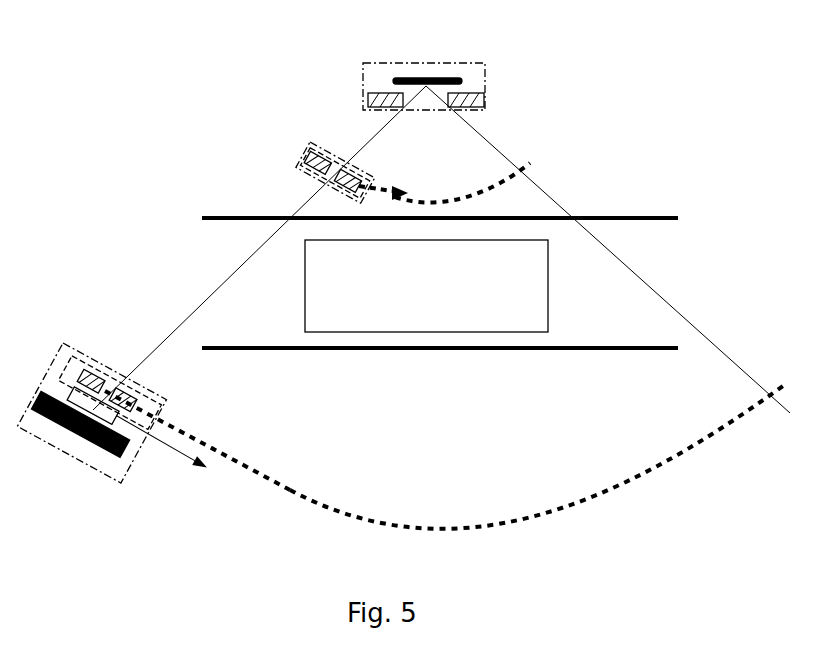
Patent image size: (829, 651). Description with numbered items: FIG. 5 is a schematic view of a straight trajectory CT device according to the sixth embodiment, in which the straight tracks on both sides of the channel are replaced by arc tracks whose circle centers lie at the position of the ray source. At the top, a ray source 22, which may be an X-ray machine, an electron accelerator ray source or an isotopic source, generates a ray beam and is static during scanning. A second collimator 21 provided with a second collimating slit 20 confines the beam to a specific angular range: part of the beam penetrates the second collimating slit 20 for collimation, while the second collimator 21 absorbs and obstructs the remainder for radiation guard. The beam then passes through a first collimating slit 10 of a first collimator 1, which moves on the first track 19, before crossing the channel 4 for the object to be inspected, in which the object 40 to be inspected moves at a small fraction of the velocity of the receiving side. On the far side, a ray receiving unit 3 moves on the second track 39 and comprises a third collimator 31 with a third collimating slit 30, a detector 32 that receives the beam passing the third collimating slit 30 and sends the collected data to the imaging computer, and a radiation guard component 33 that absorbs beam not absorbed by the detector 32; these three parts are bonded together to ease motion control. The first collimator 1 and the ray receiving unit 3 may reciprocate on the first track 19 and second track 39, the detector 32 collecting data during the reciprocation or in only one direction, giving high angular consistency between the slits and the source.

The first collimator 1 is at (286, 140).
The first collimating slit 10 is at (314, 180).
The second collimating slit 20 is at (395, 69).
The second collimator 21 is at (497, 67).
The ray source 22 is at (465, 50).
The first track 19 is at (541, 143).
The object to be inspected 40 is at (536, 233).
The channel for the object to be inspected 4 is at (482, 277).
The ray receiving unit 3 is at (111, 442).
The third collimating slit 30 is at (98, 364).
The third collimator 31 is at (225, 423).
The detector 32 is at (220, 448).
The radiation guard component 33 is at (202, 471).
The second track 39 is at (538, 456).